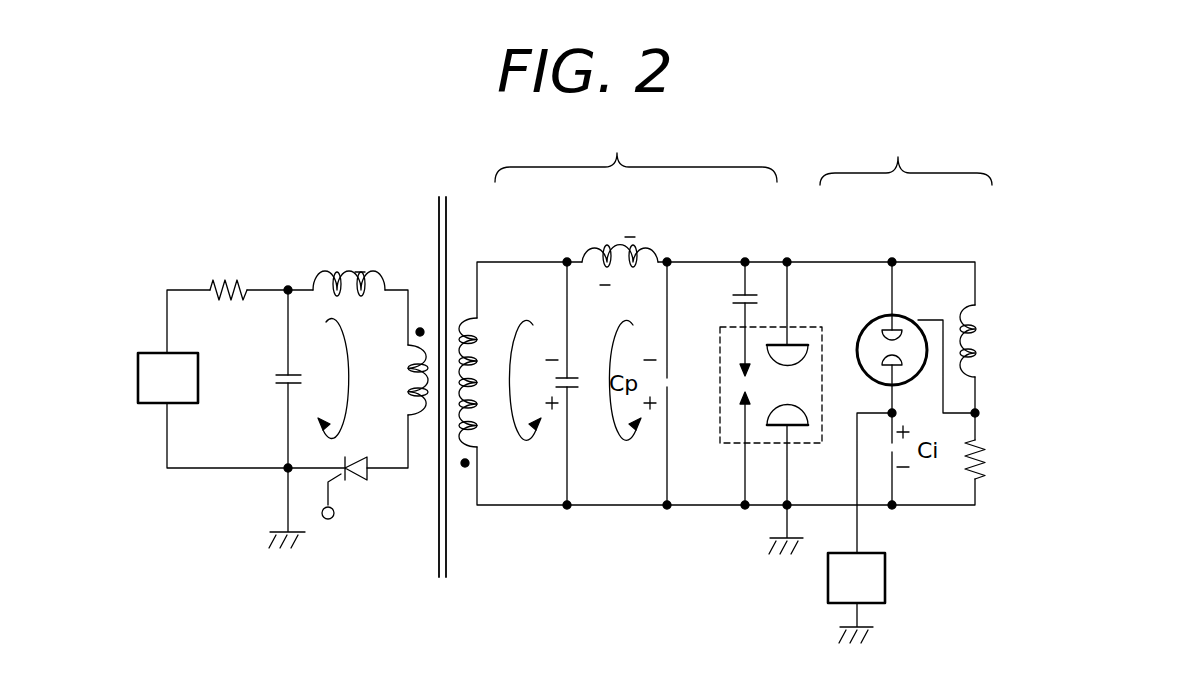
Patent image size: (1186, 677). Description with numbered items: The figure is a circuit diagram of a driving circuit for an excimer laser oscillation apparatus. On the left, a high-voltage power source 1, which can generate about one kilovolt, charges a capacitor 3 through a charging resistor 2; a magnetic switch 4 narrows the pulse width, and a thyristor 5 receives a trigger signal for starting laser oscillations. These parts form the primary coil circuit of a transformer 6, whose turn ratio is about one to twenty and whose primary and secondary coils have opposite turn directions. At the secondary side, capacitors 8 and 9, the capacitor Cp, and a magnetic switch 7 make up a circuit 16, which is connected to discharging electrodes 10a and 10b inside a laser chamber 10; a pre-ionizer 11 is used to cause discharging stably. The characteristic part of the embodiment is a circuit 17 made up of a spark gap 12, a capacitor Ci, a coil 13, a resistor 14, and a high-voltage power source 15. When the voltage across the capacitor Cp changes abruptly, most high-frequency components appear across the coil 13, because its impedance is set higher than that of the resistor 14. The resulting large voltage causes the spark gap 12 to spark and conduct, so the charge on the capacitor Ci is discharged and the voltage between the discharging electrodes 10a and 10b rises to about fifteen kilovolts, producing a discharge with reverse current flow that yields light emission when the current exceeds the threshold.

The high-voltage power source 1 is at (198, 368).
The charging resistor 2 is at (225, 282).
The capacitor 3 is at (302, 377).
The magnetic switch 4 is at (345, 284).
The thyristor 5 is at (356, 455).
The transformer 6 is at (444, 189).
The magnetic switch 7 is at (606, 266).
The capacitor 8 is at (570, 374).
The capacitor 9 is at (733, 299).
The laser chamber 10 is at (806, 327).
The discharging electrode 10a is at (808, 362).
The discharging electrode 10b is at (795, 430).
The pre-ionizer 11 is at (735, 383).
The spark gap 12 is at (904, 338).
The coil 13 is at (990, 318).
The resistor 14 is at (986, 466).
The high-voltage power source 15 is at (886, 568).
The circuit 16 is at (636, 153).
The circuit 17 is at (906, 156).